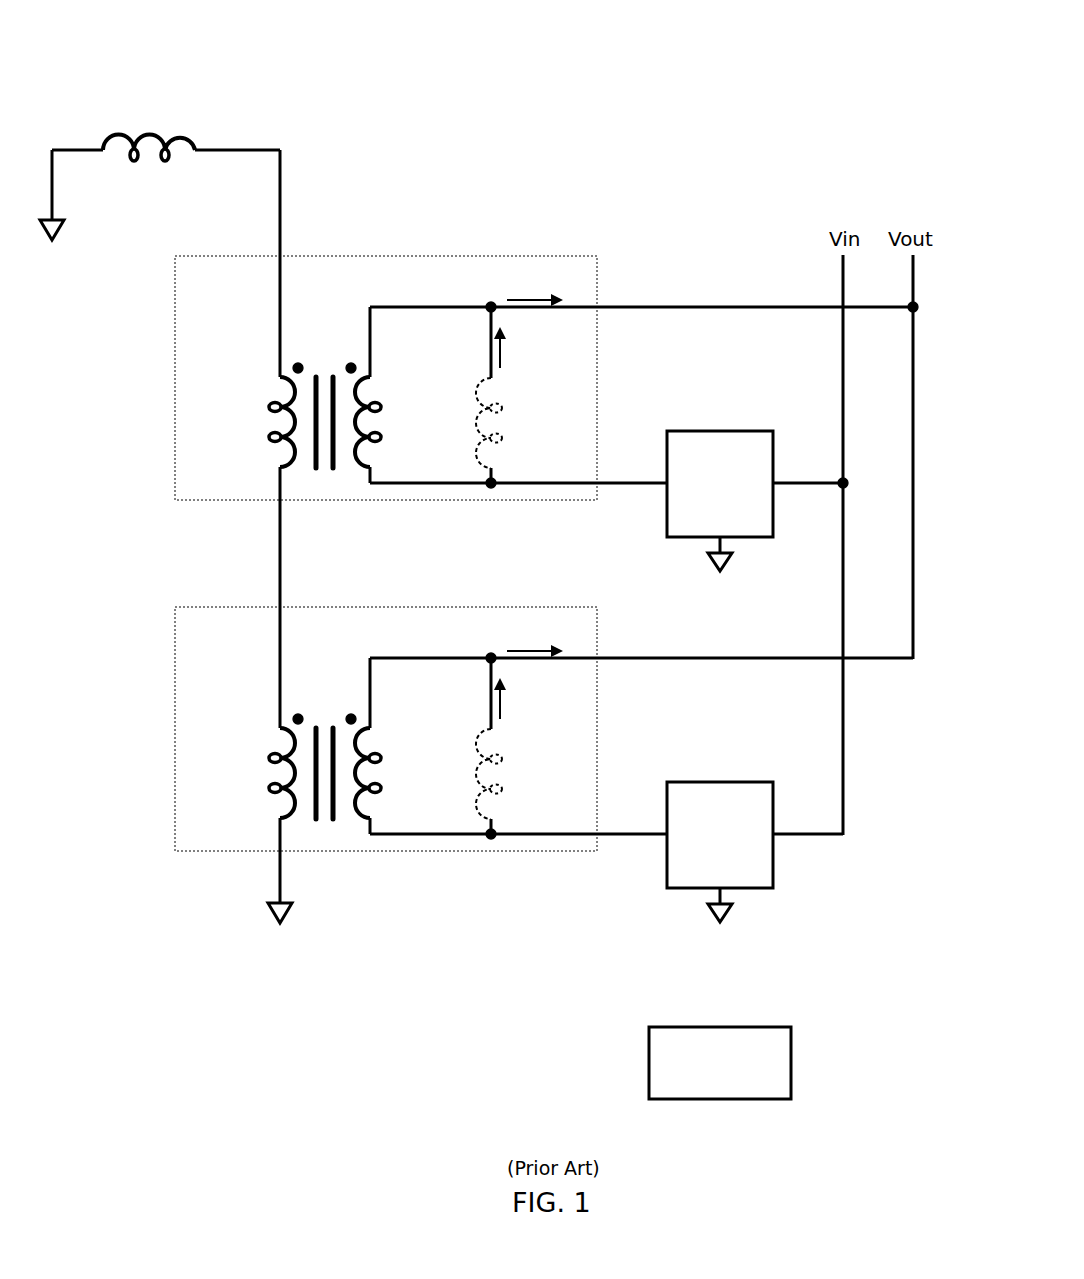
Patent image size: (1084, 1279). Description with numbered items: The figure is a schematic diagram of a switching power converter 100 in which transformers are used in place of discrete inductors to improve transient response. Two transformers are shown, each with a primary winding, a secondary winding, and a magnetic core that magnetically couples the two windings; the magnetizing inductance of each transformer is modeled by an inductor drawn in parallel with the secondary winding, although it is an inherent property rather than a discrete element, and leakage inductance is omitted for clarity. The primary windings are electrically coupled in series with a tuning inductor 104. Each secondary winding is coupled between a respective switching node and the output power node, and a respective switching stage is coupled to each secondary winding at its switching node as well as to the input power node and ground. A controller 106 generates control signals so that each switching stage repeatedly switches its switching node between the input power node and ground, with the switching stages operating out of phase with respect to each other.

The switching power converter 100 is at (898, 38).
The tuning inductor 104 is at (163, 114).
The controller 106 is at (720, 1063).